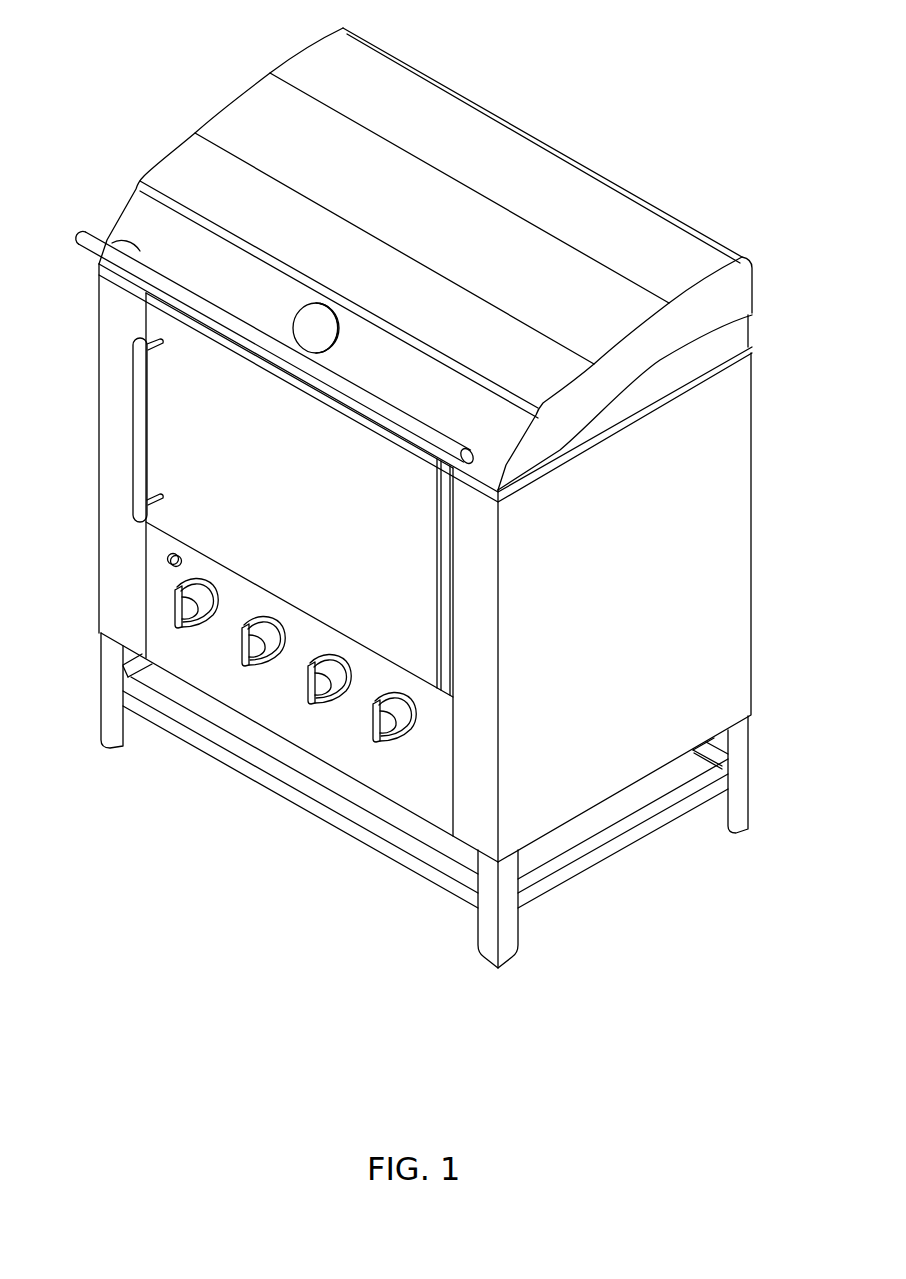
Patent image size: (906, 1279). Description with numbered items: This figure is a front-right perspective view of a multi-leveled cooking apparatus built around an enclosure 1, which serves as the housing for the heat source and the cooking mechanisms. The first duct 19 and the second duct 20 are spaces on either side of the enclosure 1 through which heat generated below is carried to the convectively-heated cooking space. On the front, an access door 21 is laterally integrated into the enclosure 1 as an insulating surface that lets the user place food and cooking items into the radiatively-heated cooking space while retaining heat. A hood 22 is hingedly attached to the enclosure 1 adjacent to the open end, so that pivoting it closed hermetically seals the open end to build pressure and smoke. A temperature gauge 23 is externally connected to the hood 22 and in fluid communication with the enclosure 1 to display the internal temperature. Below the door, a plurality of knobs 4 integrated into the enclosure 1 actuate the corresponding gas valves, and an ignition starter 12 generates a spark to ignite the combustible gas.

The enclosure 1 is at (201, 58).
The plurality of knobs 4 is at (191, 580).
The ignition starter 12 is at (172, 567).
The first duct 19 is at (108, 373).
The second duct 20 is at (721, 524).
The access door 21 is at (300, 498).
The hood 22 is at (417, 227).
The temperature gauge 23 is at (322, 334).